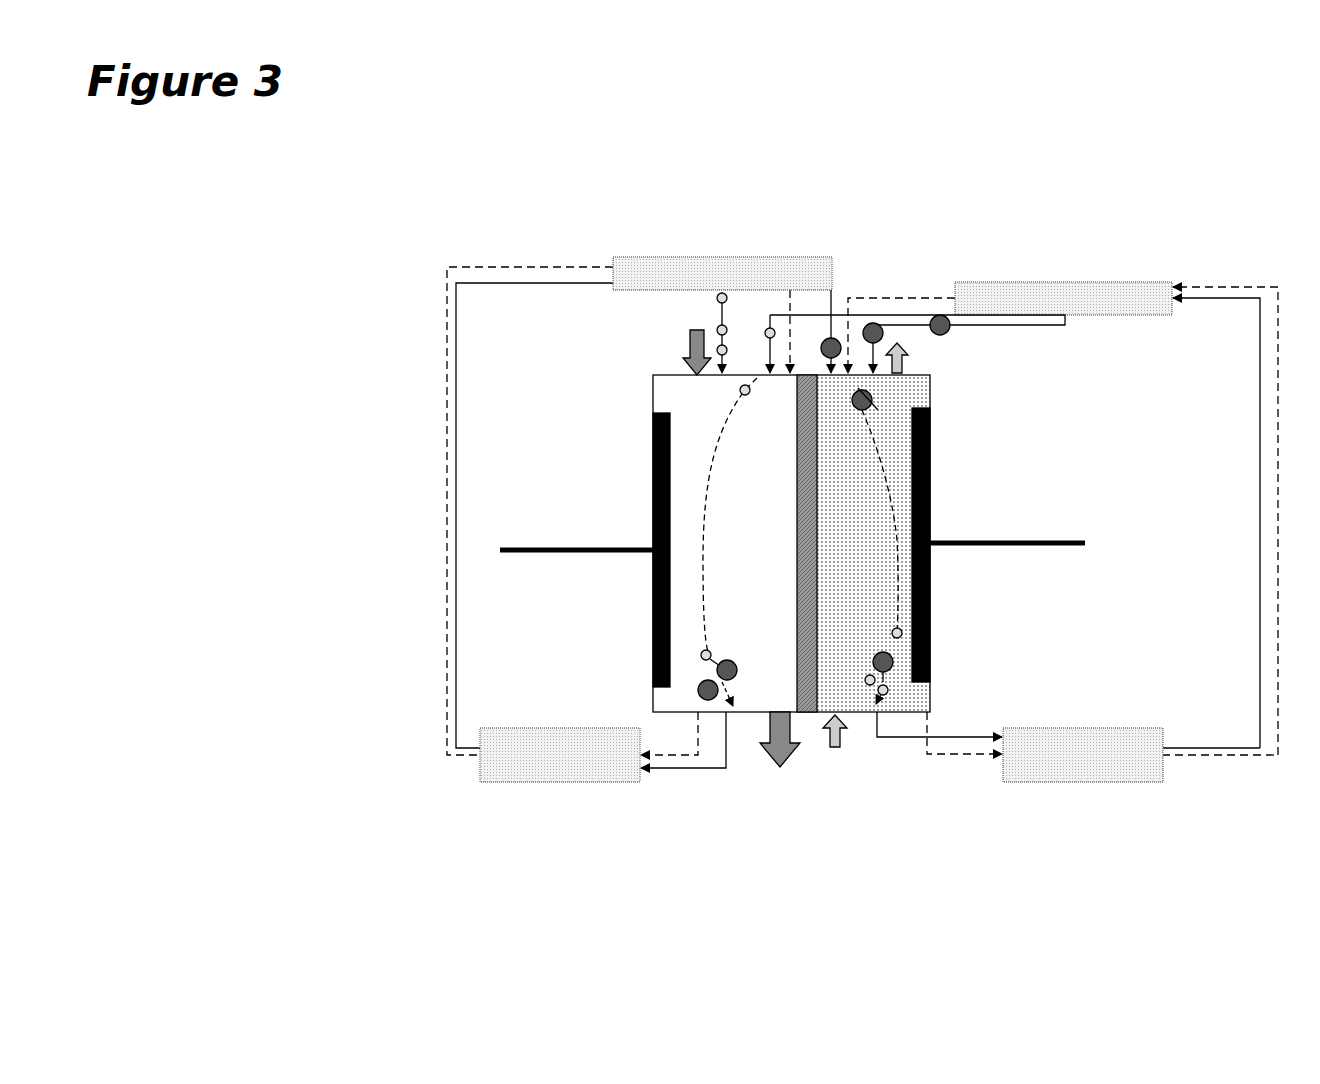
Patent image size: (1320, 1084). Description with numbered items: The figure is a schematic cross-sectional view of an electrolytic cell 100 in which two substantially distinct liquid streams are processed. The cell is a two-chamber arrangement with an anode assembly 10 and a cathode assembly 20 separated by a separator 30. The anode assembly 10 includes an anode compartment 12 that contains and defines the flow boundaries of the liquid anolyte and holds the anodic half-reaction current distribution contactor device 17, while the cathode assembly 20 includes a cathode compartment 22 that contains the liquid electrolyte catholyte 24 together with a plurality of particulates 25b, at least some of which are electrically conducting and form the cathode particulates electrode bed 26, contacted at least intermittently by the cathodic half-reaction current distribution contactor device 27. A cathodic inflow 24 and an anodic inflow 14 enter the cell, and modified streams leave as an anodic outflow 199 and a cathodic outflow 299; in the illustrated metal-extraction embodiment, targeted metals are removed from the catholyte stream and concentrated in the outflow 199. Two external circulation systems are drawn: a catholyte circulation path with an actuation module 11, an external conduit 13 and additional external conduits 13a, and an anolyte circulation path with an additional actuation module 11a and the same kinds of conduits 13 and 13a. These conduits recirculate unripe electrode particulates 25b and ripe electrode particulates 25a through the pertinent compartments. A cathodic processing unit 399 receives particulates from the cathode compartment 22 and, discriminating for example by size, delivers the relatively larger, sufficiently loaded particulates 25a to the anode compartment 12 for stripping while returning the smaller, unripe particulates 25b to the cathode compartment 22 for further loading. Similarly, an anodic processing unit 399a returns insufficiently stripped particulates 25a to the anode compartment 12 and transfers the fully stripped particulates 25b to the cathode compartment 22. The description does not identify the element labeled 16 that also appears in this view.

The electrolytic cell 100 is at (413, 248).
The additional external conduits 13a is at (558, 262).
The external conduit 13 is at (722, 753).
The cathodic processing unit 399 is at (722, 273).
The anodic processing unit 399a is at (1063, 298).
The actuation module 11 is at (560, 755).
The additional actuation module 11a is at (1083, 755).
The cathode assembly 20 is at (745, 680).
The cathode compartment 22 is at (707, 542).
The anode compartment 12 is at (873, 543).
The separator 30 is at (807, 715).
The cathodic half-reaction current distribution contactor device 27 is at (651, 527).
The anodic half-reaction current distribution contactor device 17 is at (972, 534).
The liquid electrolyte catholyte 24 is at (683, 360).
The unripe electrode particulates 25b is at (745, 383).
The ripe electrode particulates 25a is at (880, 322).
The anodic outflow 199 is at (910, 355).
The cathodic outflow 299 is at (783, 770).
The anodic inflow 14 is at (835, 749).
The cathode particulates electrode bed 26 is at (757, 716).
The anolyte outlet 16 is at (853, 683).
The anode assembly 10 is at (940, 710).